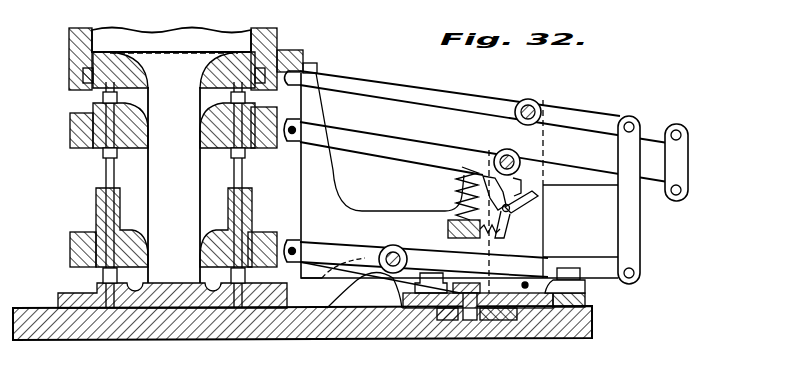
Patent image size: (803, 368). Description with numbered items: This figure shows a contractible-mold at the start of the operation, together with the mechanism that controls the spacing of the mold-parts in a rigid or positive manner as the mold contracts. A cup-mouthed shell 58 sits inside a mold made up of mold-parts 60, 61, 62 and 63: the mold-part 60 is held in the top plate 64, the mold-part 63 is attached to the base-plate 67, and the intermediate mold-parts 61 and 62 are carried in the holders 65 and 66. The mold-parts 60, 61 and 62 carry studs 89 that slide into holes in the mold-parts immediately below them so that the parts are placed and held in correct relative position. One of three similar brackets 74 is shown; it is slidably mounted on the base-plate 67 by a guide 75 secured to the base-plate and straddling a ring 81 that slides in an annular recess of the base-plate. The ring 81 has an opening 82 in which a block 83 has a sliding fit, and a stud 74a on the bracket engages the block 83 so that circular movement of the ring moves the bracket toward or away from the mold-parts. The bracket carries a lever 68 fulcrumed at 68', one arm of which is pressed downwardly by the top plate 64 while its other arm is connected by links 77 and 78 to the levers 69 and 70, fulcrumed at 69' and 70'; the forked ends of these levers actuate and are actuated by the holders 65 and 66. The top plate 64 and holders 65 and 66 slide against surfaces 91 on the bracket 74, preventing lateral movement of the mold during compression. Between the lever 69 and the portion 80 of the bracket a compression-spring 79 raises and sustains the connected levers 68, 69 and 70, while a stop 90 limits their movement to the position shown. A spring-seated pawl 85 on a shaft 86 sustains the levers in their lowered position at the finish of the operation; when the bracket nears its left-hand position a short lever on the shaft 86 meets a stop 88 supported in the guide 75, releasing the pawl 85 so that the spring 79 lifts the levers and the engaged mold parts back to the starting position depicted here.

The cup-mouthed shell 58 is at (184, 52).
The mold-part 60 is at (280, 46).
The mold-part 61 is at (222, 125).
The mold-part 62 is at (228, 210).
The mold-part 63 is at (148, 300).
The top plate 64 is at (305, 56).
The holder 65 is at (70, 123).
The holder 66 is at (70, 241).
The base-plate 67 is at (300, 325).
The lever 68 is at (477, 101).
The fulcrum 68' is at (552, 103).
The lever 69 is at (476, 151).
The fulcrum 69' is at (543, 160).
The lever 70 is at (416, 249).
The fulcrum 70' is at (396, 247).
The bracket 74 is at (340, 207).
The stud 74a is at (470, 272).
The guide 75 is at (582, 288).
The link 77 is at (640, 225).
The link 78 is at (688, 167).
The compression-spring 79 is at (458, 189).
The portion of the bracket 80 is at (450, 232).
The ring 81 is at (527, 320).
The opening 82 is at (455, 320).
The block 83 is at (477, 320).
The spring-seated pawl 85 is at (522, 196).
The shaft 86 is at (510, 208).
The stop 88 is at (485, 160).
The stud 89 is at (105, 97).
The stop 90 is at (527, 287).
The surface 91 is at (301, 183).